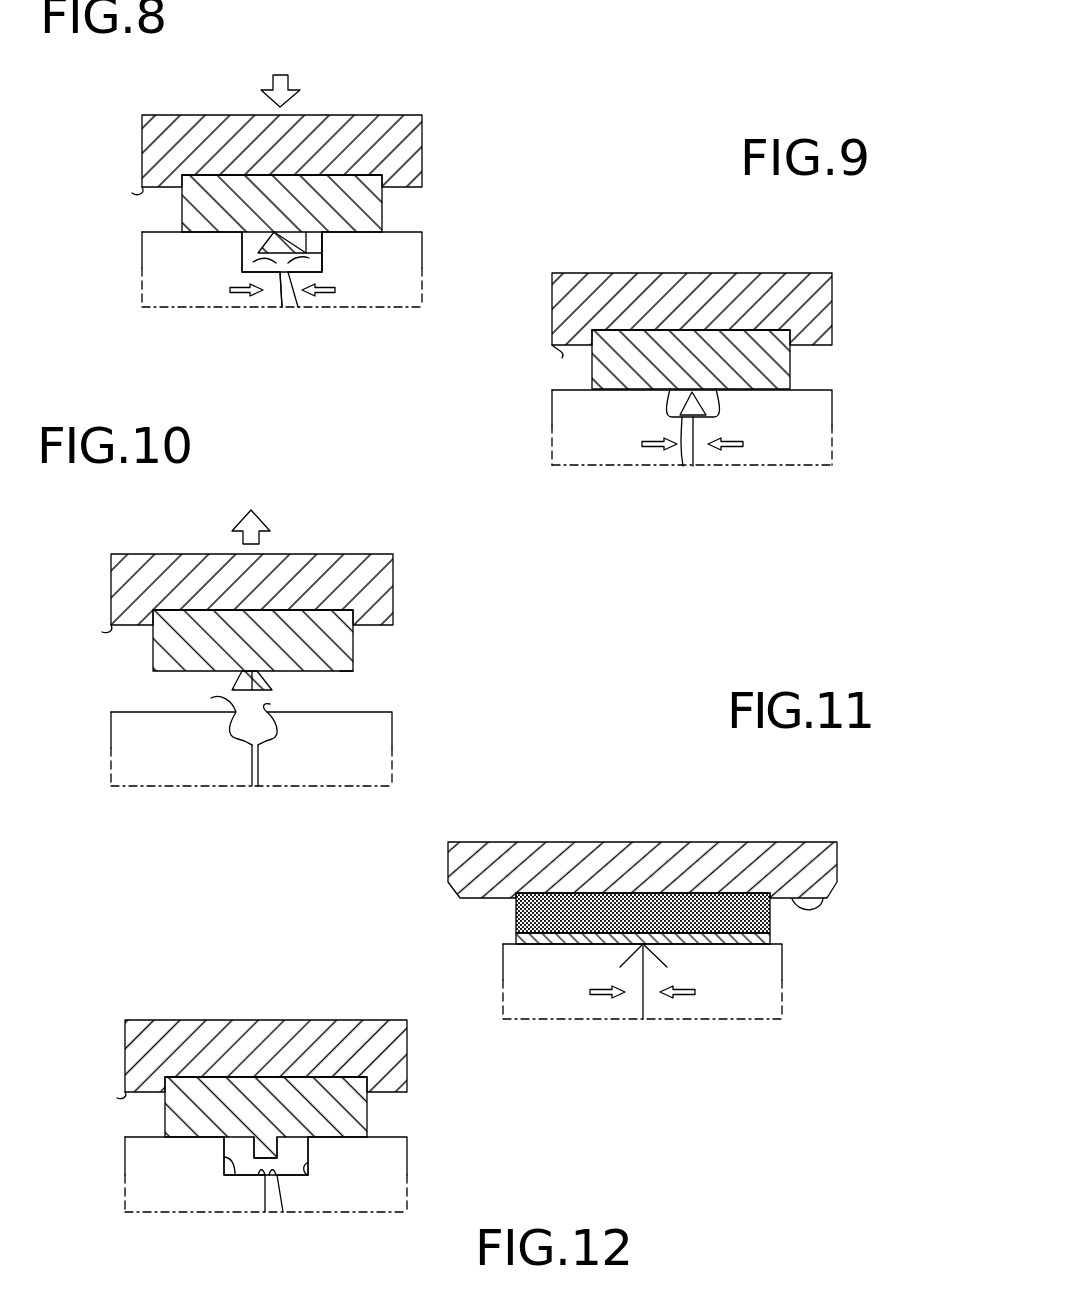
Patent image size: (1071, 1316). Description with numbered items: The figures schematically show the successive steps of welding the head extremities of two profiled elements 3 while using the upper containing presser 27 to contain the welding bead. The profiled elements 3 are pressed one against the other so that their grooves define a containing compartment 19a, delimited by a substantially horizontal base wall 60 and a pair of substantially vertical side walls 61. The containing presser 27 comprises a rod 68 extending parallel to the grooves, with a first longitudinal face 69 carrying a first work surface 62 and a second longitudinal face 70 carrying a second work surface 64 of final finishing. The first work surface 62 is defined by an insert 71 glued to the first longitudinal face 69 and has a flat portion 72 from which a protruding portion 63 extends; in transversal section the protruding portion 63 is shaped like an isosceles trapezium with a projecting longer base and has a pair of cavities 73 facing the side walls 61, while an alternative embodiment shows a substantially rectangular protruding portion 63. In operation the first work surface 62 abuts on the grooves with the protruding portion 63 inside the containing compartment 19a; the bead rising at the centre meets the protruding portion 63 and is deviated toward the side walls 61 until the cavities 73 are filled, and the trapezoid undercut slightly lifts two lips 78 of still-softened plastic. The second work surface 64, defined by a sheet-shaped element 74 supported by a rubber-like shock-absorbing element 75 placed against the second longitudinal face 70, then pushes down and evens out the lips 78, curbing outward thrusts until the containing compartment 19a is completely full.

In FIG. 8, the profiled element 3 is at (167, 298).
In FIG. 9, the profiled element 3 is at (568, 444).
In FIG. 10, the profiled element 3 is at (138, 766).
In FIG. 11, the profiled element 3 is at (537, 1002).
In FIG. 12, the profiled element 3 is at (157, 1197).
In FIG. 8, the containing compartment 19a is at (243, 265).
In FIG. 10, the containing compartment 19a is at (262, 745).
In FIG. 12, the containing compartment 19a is at (222, 1148).
In FIG. 8, the upper containing presser 27 is at (301, 154).
In FIG. 9, the upper containing presser 27 is at (675, 355).
In FIG. 10, the upper containing presser 27 is at (270, 674).
In FIG. 11, the upper containing presser 27 is at (642, 831).
In FIG. 12, the upper containing presser 27 is at (258, 1046).
In FIG. 8, the base wall 60 is at (296, 275).
In FIG. 12, the base wall 60 is at (276, 1178).
In FIG. 8, the side wall 61 is at (243, 248).
In FIG. 12, the side wall 61 is at (232, 1176).
In FIG. 8, the first work surface 62 is at (386, 213).
In FIG. 9, the first work surface 62 is at (795, 371).
In FIG. 10, the first work surface 62 is at (357, 650).
In FIG. 12, the first work surface 62 is at (370, 1121).
In FIG. 8, the protruding portion 63 is at (281, 245).
In FIG. 9, the protruding portion 63 is at (692, 407).
In FIG. 10, the protruding portion 63 is at (253, 683).
In FIG. 12, the protruding portion 63 is at (265, 1152).
In FIG. 11, the second work surface 64 is at (625, 931).
In FIG. 8, the rod 68 is at (385, 137).
In FIG. 9, the rod 68 is at (613, 297).
In FIG. 10, the rod 68 is at (322, 572).
In FIG. 11, the rod 68 is at (528, 862).
In FIG. 12, the rod 68 is at (245, 1043).
In FIG. 8, the first longitudinal face 69 is at (132, 193).
In FIG. 9, the first longitudinal face 69 is at (562, 358).
In FIG. 10, the first longitudinal face 69 is at (102, 632).
In FIG. 12, the first longitudinal face 69 is at (117, 1098).
In FIG. 11, the second longitudinal face 70 is at (820, 893).
In FIG. 8, the insert 71 is at (213, 207).
In FIG. 9, the insert 71 is at (760, 343).
In FIG. 10, the insert 71 is at (183, 642).
In FIG. 12, the insert 71 is at (195, 1108).
In FIG. 8, the flat portion 72 is at (327, 250).
In FIG. 10, the flat portion 72 is at (340, 671).
In FIG. 8, the cavity 73 is at (240, 234).
In FIG. 10, the cavity 73 is at (236, 678).
In FIG. 11, the sheet-shaped element 74 is at (516, 936).
In FIG. 11, the shock-absorbing element 75 is at (516, 917).
In FIG. 10, the lip 78 is at (211, 698).